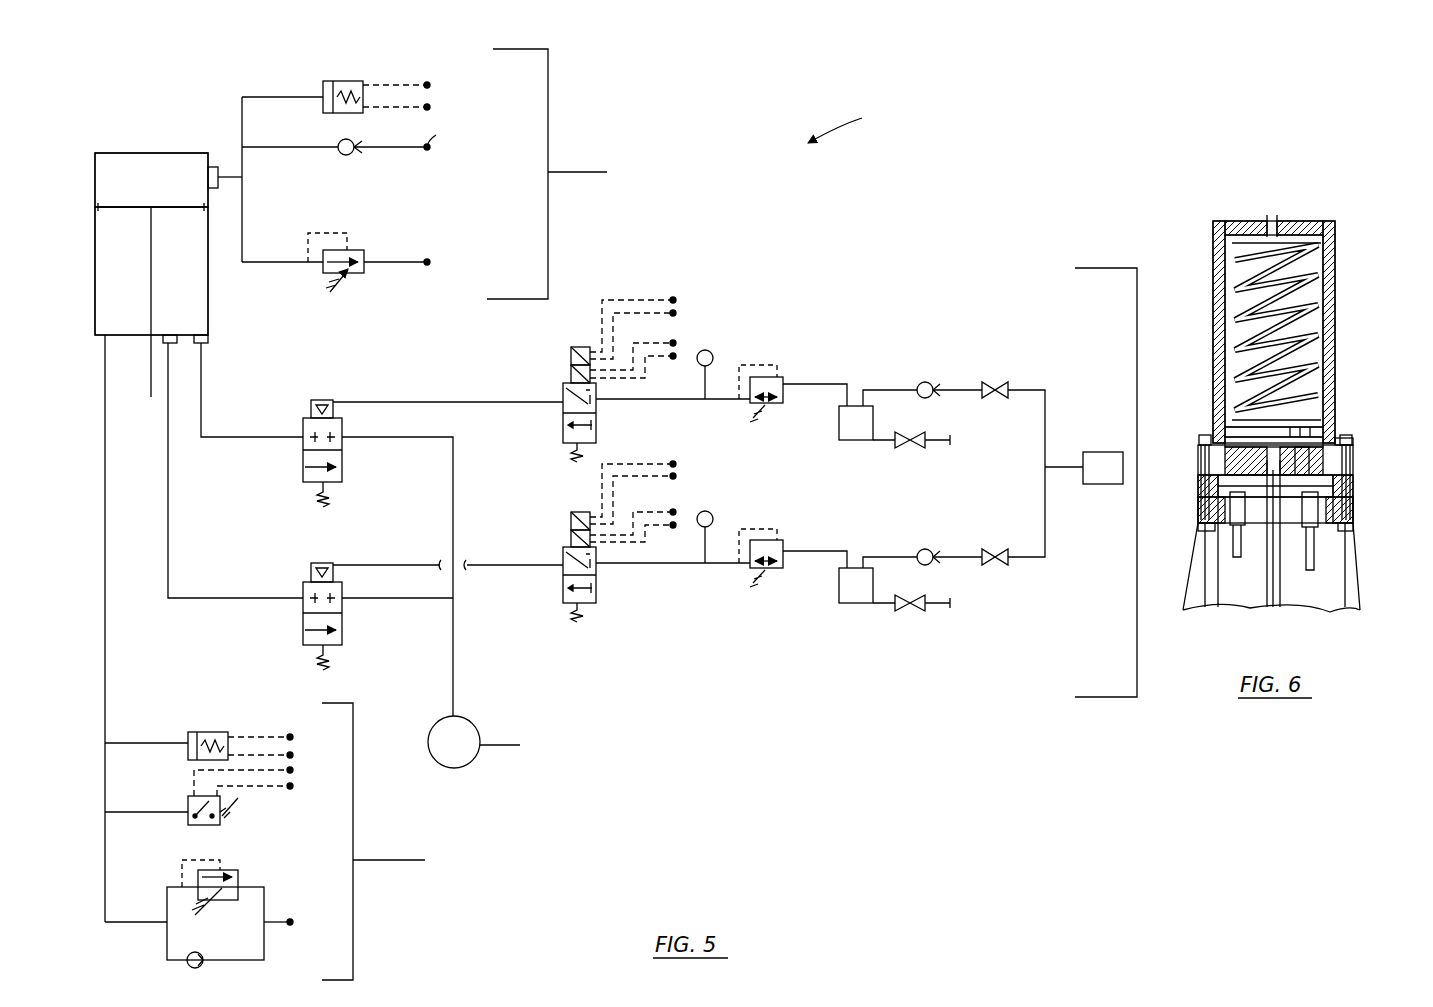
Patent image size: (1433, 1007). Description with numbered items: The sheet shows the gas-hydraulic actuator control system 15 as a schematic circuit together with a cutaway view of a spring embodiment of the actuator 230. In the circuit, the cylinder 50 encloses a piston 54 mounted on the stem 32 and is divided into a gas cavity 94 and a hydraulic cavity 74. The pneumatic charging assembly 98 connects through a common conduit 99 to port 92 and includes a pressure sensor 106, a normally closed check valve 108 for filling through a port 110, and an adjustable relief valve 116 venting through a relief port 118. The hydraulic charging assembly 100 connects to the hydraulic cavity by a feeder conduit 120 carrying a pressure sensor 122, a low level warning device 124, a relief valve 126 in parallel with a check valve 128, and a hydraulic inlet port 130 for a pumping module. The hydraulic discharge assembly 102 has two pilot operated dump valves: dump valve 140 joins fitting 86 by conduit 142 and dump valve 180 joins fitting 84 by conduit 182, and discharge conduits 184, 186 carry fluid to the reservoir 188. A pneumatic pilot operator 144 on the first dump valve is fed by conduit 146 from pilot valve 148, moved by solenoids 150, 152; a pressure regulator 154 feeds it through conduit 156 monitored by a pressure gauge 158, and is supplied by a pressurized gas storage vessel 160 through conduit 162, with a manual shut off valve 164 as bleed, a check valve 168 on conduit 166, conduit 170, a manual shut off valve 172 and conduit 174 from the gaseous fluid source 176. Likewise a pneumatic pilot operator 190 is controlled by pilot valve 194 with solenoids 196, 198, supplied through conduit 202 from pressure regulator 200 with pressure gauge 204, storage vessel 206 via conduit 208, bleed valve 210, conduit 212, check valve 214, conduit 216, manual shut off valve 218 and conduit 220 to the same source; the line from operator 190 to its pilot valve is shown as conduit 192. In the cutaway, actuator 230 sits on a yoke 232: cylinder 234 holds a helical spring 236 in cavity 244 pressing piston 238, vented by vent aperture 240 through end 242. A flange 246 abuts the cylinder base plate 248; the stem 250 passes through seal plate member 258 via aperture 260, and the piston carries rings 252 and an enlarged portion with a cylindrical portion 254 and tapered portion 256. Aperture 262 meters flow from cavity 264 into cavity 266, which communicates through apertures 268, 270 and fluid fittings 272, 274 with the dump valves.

In FIG. 5, the gas-hydraulic actuator control system 15 is at (850, 121).
In FIG. 5, the stem 32 is at (148, 366).
In FIG. 5, the cylinder 50 is at (92, 175).
In FIG. 5, the piston 54 is at (124, 203).
In FIG. 5, the cavity 74 is at (108, 262).
In FIG. 5, the fitting 84 is at (172, 345).
In FIG. 5, the fitting 86 is at (205, 343).
In FIG. 5, the port 92 is at (220, 165).
In FIG. 5, the cavity 94 is at (122, 158).
In FIG. 5, the pneumatic charging assembly 98 is at (553, 132).
In FIG. 5, the common conduit 99 is at (244, 200).
In FIG. 5, the hydraulic charging assembly 100 is at (357, 885).
In FIG. 5, the hydraulic discharge assembly 102 is at (1142, 655).
In FIG. 5, the pressure sensor 106 is at (330, 80).
In FIG. 5, the check valve 108 is at (338, 145).
In FIG. 5, the port 110 is at (431, 140).
In FIG. 5, the relief valve 116 is at (312, 248).
In FIG. 5, the relief port 118 is at (431, 260).
In FIG. 5, the feeder conduit 120 is at (105, 550).
In FIG. 5, the pressure sensor 122 is at (207, 732).
In FIG. 5, the low level warning device 124 is at (186, 806).
In FIG. 5, the relief valve 126 is at (196, 882).
In FIG. 5, the check valve 128 is at (187, 962).
In FIG. 5, the hydraulic inlet port 130 is at (291, 918).
In FIG. 5, the pilot operated dump valve 140 is at (303, 448).
In FIG. 5, the conduit 142 is at (201, 412).
In FIG. 5, the pneumatic pilot operator 144 is at (332, 400).
In FIG. 5, the conduit 146 is at (418, 401).
In FIG. 5, the pilot valve 148 is at (563, 430).
In FIG. 5, the electrical solenoid 150 is at (570, 350).
In FIG. 5, the electrical solenoid 152 is at (570, 372).
In FIG. 5, the pressure regulator 154 is at (782, 376).
In FIG. 5, the conduit 156 is at (640, 401).
In FIG. 5, the pressure gauge 158 is at (712, 352).
In FIG. 5, the pressurized gas storage vessel 160 is at (860, 440).
In FIG. 5, the conduit 162 is at (830, 384).
In FIG. 5, the manual shut off valve 164 is at (908, 447).
In FIG. 5, the conduit 166 is at (895, 388).
In FIG. 5, the check valve 168 is at (930, 385).
In FIG. 5, the conduit 170 is at (948, 391).
In FIG. 5, the manual shut off valve 172 is at (988, 380).
In FIG. 5, the conduit 174 is at (1045, 420).
In FIG. 5, the gaseous fluid source 176 is at (1102, 484).
In FIG. 5, the pilot operated dump valve 180 is at (303, 608).
In FIG. 5, the conduit 182 is at (168, 548).
In FIG. 5, the discharge conduit 184 is at (450, 472).
In FIG. 5, the discharge conduit 186 is at (420, 600).
In FIG. 5, the reservoir 188 is at (458, 716).
In FIG. 5, the pneumatic pilot operator 190 is at (321, 563).
In FIG. 5, the hydraulic line 192 is at (360, 563).
In FIG. 5, the pilot valve 194 is at (563, 585).
In FIG. 5, the electrical solenoid 196 is at (570, 515).
In FIG. 5, the electrical solenoid 198 is at (570, 540).
In FIG. 5, the pressure regulator 200 is at (782, 540).
In FIG. 5, the conduit 202 is at (645, 565).
In FIG. 5, the pressure gauge 204 is at (711, 513).
In FIG. 5, the pressurized gas storage vessel 206 is at (860, 604).
In FIG. 5, the conduit 208 is at (812, 551).
In FIG. 5, the manual shut off valve 210 is at (916, 612).
In FIG. 5, the conduit 212 is at (878, 556).
In FIG. 5, the check valve 214 is at (932, 550).
In FIG. 5, the conduit 216 is at (948, 559).
In FIG. 5, the manual shut off valve 218 is at (1010, 562).
In FIG. 5, the conduit 220 is at (1048, 540).
In FIG. 6, the actuator 230 is at (1208, 218).
In FIG. 6, the yoke 232 is at (1352, 585).
In FIG. 6, the cylinder 234 is at (1330, 300).
In FIG. 6, the helical spring 236 is at (1322, 240).
In FIG. 6, the piston 238 is at (1310, 425).
In FIG. 6, the vent aperture 240 is at (1273, 218).
In FIG. 6, the end 242 is at (1240, 221).
In FIG. 6, the cavity 244 is at (1308, 240).
In FIG. 6, the flange 246 is at (1344, 440).
In FIG. 6, the cylinder base plate 248 is at (1312, 477).
In FIG. 6, the stem 250 is at (1283, 600).
In FIG. 6, the rings 252 is at (1199, 441).
In FIG. 6, the cylindrical portion 254 is at (1265, 445).
In FIG. 6, the tapered portion 256 is at (1215, 527).
In FIG. 6, the seal plate member 258 is at (1228, 462).
In FIG. 6, the aperture 260 is at (1230, 485).
In FIG. 6, the aperture 262 is at (1352, 442).
In FIG. 6, the cavity 264 is at (1322, 455).
In FIG. 6, the cavity 266 is at (1340, 505).
In FIG. 6, the aperture 268 is at (1205, 505).
In FIG. 6, the aperture 270 is at (1348, 528).
In FIG. 6, the fluid fitting 272 is at (1246, 560).
In FIG. 6, the fluid fitting 274 is at (1318, 535).